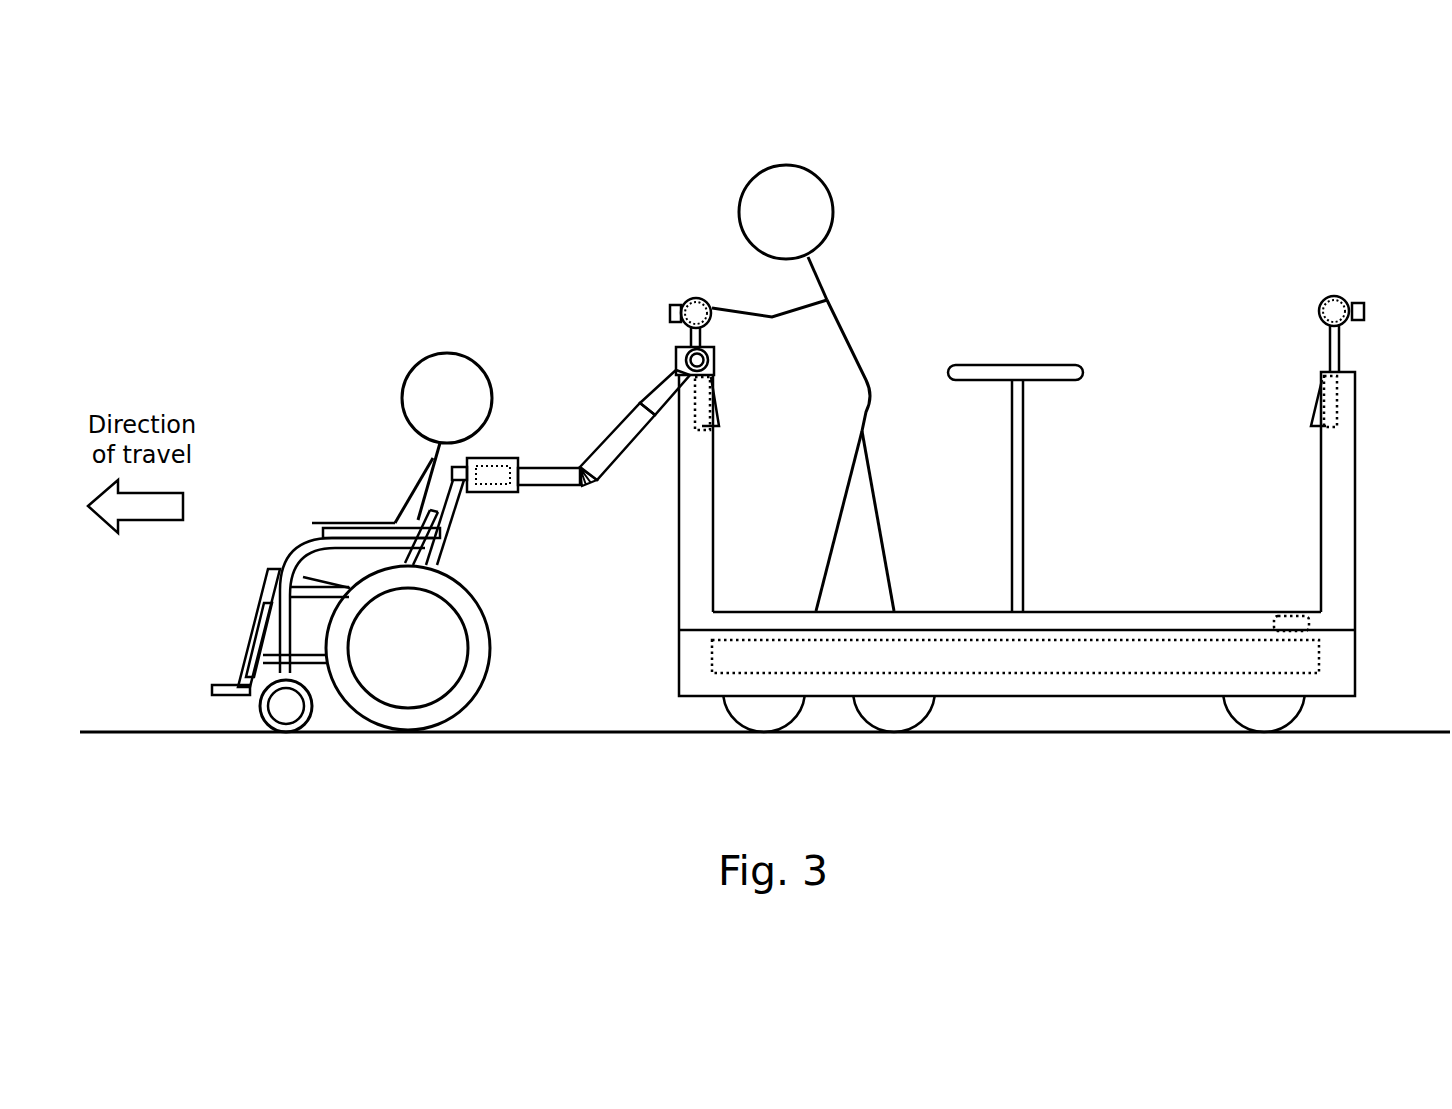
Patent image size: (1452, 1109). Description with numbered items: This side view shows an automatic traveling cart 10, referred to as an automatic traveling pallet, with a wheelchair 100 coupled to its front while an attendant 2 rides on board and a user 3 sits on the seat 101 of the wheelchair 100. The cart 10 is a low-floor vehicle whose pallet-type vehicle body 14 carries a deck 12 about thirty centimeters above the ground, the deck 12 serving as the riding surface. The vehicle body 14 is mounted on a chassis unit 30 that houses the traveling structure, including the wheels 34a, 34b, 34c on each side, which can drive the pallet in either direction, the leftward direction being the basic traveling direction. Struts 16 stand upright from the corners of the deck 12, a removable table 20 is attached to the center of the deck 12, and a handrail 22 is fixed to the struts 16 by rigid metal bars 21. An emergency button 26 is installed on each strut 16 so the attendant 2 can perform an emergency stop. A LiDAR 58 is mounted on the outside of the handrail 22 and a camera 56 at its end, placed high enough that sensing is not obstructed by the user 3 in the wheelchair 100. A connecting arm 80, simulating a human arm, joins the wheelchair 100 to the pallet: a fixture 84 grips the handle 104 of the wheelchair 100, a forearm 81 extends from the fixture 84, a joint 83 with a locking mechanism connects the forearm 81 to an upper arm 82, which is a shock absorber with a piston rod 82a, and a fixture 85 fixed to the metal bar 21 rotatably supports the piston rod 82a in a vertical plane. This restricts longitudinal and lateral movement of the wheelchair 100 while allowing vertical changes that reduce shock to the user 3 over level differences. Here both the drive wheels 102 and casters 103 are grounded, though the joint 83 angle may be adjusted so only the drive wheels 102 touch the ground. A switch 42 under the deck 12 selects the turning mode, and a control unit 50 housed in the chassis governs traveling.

The attendant 2 is at (832, 192).
The user 3 is at (443, 352).
The automatic traveling cart 10 is at (1128, 222).
The deck 12 is at (1178, 612).
The vehicle body 14 is at (1062, 575).
The strut 16 is at (697, 559).
The table 20 is at (1048, 366).
The metal bar 21 is at (690, 338).
The handrail 22 is at (690, 299).
The emergency button 26 is at (710, 405).
The chassis unit 30 is at (1364, 672).
The wheel 34a is at (796, 727).
The wheel 34b is at (924, 727).
The wheel 34c is at (1294, 725).
The switch 42 is at (1268, 616).
The control unit 50 is at (990, 675).
The camera 56 is at (712, 326).
The LiDAR 58 is at (670, 310).
The connecting arm 80 is at (590, 433).
The forearm 81 is at (562, 466).
The upper arm 82 is at (630, 410).
The piston rod 82a is at (664, 408).
The joint 83 is at (583, 486).
The fixture 84 is at (502, 493).
The fixture 85 is at (676, 352).
The wheelchair 100 is at (292, 528).
The seat 101 is at (300, 572).
The drive wheel 102 is at (453, 722).
The caster 103 is at (300, 720).
The handle 104 is at (458, 493).